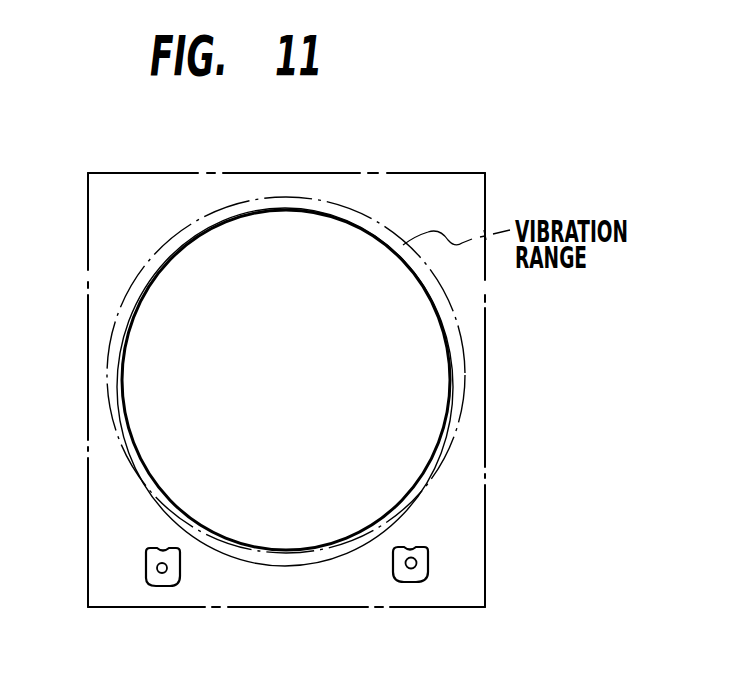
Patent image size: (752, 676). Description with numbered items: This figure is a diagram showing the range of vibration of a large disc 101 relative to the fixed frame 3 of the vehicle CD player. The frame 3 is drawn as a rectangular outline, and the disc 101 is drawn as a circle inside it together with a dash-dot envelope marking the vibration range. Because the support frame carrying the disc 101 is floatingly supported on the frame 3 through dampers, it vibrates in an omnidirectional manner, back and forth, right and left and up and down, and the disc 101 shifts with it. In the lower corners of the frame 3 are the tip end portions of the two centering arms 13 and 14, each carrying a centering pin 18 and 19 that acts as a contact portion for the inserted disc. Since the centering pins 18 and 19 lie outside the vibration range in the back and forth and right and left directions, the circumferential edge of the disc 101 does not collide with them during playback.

The frame 3 is at (88, 244).
The disc 101 is at (372, 233).
The centering arm 13 is at (430, 553).
The centering arm 14 is at (139, 559).
The centering pin 18 is at (430, 572).
The centering pin 19 is at (146, 577).